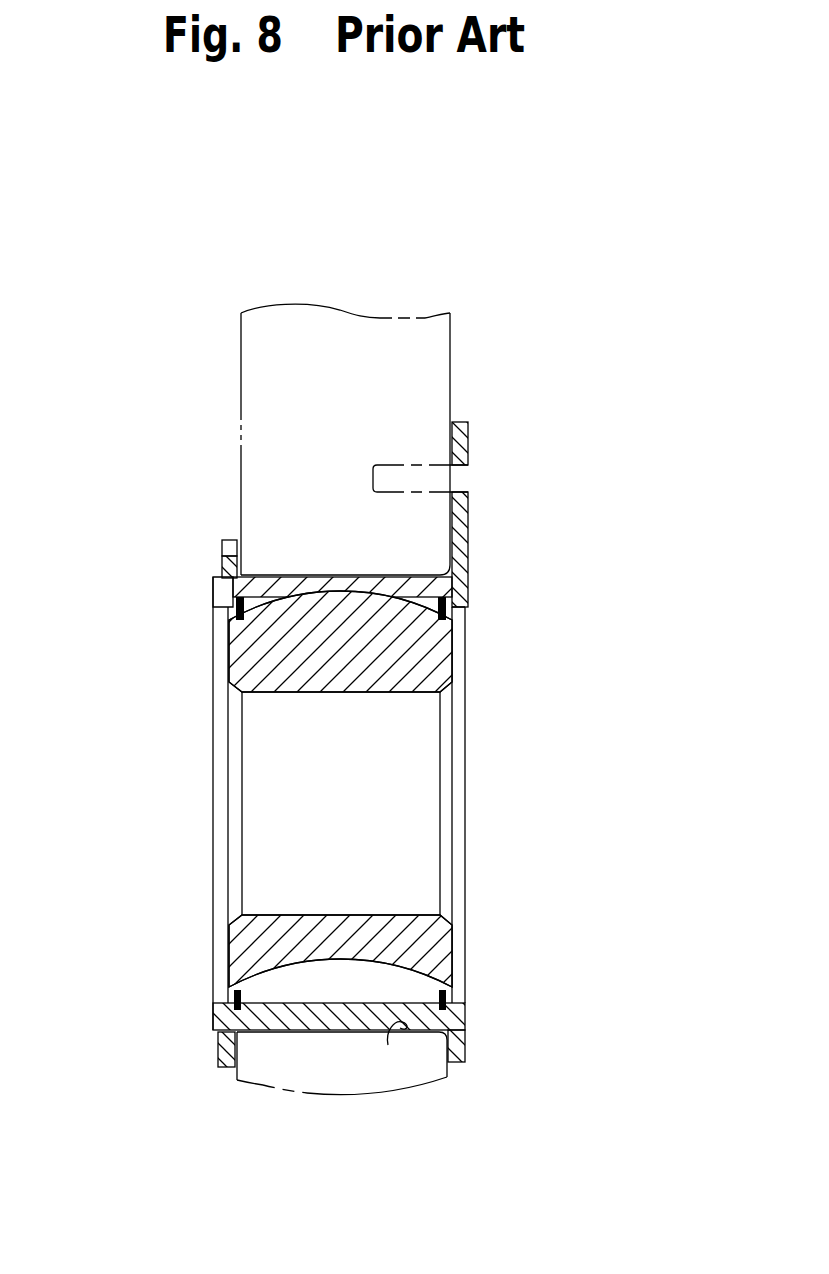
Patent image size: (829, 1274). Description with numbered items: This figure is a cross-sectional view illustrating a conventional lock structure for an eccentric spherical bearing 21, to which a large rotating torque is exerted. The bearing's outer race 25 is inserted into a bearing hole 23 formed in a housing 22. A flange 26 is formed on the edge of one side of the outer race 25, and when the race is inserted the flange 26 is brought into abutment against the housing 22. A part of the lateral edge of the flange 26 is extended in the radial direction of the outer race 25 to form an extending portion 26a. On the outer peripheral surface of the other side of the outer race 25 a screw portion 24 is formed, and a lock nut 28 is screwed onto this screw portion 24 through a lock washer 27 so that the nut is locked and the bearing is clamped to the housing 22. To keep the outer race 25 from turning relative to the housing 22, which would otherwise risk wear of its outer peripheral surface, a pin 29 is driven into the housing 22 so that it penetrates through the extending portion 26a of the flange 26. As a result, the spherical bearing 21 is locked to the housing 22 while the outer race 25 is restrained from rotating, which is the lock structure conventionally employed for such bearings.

The spherical bearing 21 is at (212, 928).
The housing 22 is at (265, 1068).
The bearing hole 23 is at (388, 1045).
The screw portion 24 is at (222, 566).
The outer race 25 is at (220, 1020).
The flange 26 is at (470, 568).
The extending portion 26a is at (468, 452).
The lock washer 27 is at (237, 540).
The lock nut 28 is at (220, 557).
The pin 29 is at (393, 465).